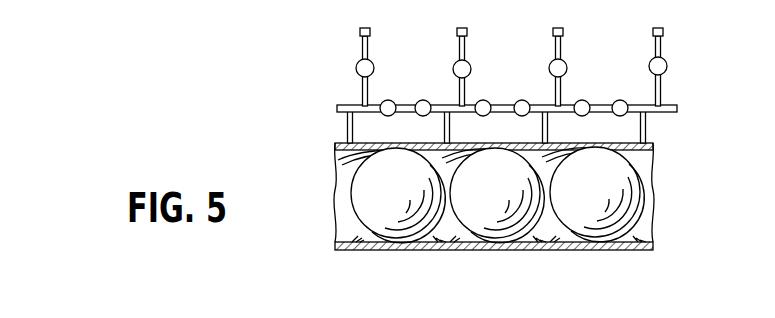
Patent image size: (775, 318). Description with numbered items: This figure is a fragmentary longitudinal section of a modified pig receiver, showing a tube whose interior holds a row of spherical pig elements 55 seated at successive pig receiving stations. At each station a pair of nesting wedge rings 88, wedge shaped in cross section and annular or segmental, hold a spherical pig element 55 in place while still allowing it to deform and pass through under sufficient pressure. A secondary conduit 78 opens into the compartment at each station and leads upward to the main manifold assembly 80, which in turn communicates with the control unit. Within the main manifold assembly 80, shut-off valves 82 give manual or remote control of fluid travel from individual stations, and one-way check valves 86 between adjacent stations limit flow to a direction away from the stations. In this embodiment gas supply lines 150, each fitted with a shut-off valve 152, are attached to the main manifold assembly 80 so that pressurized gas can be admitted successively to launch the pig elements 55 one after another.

The spherical pig element 55 is at (620, 178).
The secondary conduit 78 is at (647, 121).
The main manifold assembly 80 is at (678, 108).
The shut-off valve 82 is at (619, 100).
The one-way check valve 86 is at (487, 100).
The wedge ring 88 is at (378, 250).
The gas supply line 150 is at (664, 34).
The shut-off valve 152 is at (669, 68).